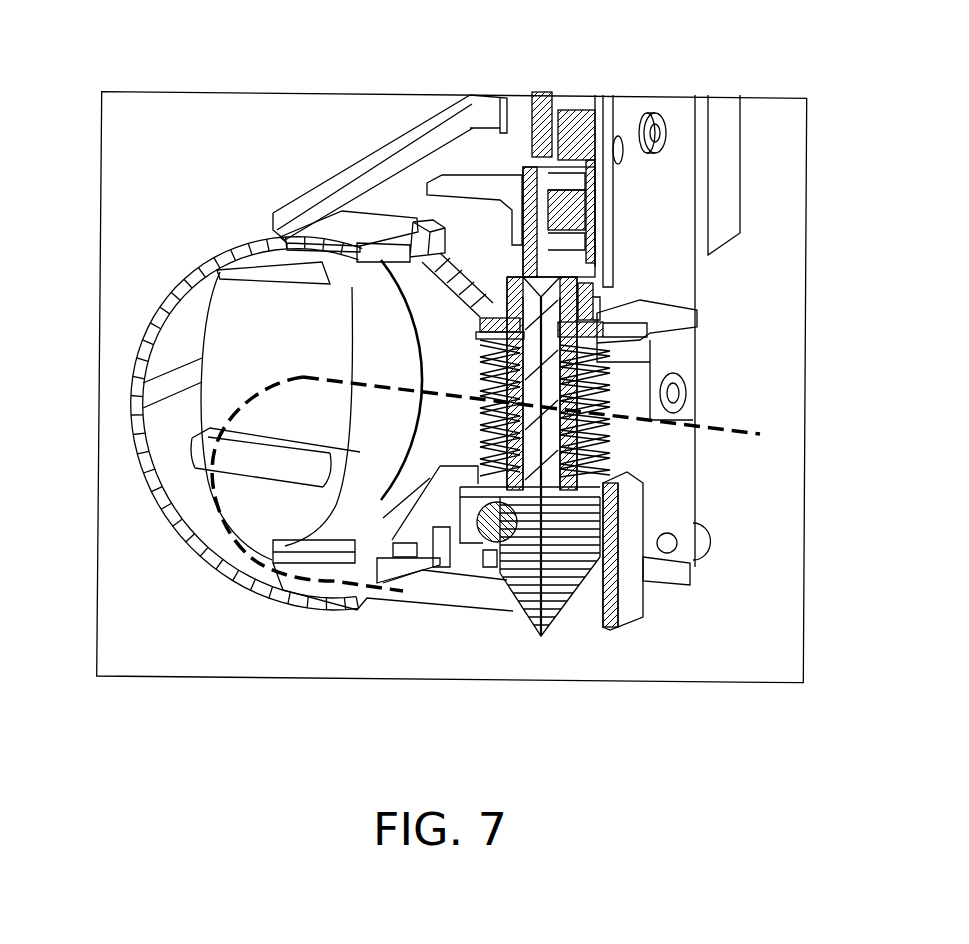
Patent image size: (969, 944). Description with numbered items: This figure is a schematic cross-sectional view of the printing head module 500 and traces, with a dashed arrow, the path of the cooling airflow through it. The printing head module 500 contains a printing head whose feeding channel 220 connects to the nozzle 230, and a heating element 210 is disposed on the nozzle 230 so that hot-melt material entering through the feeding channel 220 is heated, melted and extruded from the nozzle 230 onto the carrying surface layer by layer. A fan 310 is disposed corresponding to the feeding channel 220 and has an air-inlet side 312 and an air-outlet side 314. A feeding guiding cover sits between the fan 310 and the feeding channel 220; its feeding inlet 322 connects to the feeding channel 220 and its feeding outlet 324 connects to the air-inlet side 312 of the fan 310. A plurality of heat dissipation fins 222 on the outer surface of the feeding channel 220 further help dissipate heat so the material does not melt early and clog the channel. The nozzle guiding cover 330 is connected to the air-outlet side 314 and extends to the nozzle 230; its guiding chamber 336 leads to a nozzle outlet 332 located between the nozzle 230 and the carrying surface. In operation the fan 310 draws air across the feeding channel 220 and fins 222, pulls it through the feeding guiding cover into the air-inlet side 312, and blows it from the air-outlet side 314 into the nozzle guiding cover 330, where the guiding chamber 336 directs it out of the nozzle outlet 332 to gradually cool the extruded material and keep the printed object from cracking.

The heating element 210 is at (467, 553).
The feeding channel 220 is at (607, 367).
The heat dissipation fins 222 is at (553, 437).
The nozzle 230 is at (560, 628).
The fan 310 is at (358, 232).
The air-inlet side 312 is at (390, 258).
The air-outlet side 314 is at (304, 226).
The feeding inlet 322 is at (488, 286).
The feeding outlet 324 is at (445, 188).
The nozzle guiding cover 330 is at (133, 388).
The nozzle outlet 332 is at (373, 585).
The guiding chamber 336 is at (165, 343).
The printing head module 500 is at (857, 763).